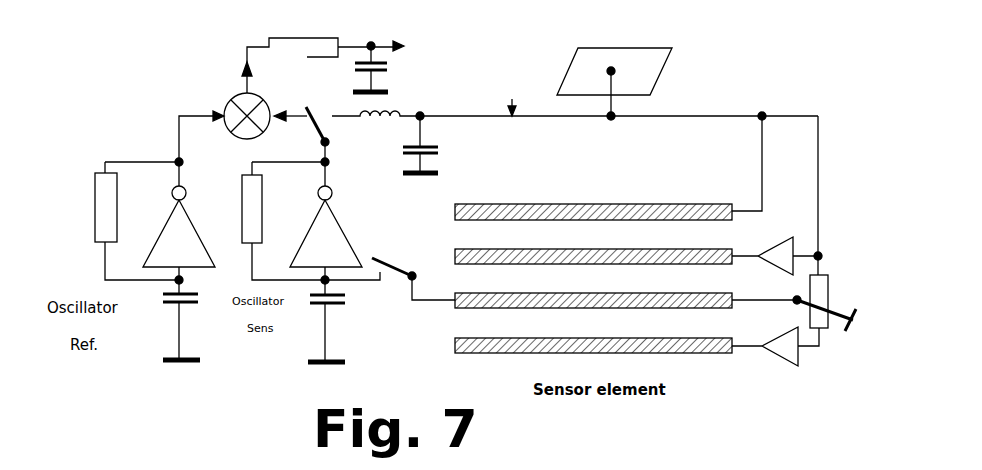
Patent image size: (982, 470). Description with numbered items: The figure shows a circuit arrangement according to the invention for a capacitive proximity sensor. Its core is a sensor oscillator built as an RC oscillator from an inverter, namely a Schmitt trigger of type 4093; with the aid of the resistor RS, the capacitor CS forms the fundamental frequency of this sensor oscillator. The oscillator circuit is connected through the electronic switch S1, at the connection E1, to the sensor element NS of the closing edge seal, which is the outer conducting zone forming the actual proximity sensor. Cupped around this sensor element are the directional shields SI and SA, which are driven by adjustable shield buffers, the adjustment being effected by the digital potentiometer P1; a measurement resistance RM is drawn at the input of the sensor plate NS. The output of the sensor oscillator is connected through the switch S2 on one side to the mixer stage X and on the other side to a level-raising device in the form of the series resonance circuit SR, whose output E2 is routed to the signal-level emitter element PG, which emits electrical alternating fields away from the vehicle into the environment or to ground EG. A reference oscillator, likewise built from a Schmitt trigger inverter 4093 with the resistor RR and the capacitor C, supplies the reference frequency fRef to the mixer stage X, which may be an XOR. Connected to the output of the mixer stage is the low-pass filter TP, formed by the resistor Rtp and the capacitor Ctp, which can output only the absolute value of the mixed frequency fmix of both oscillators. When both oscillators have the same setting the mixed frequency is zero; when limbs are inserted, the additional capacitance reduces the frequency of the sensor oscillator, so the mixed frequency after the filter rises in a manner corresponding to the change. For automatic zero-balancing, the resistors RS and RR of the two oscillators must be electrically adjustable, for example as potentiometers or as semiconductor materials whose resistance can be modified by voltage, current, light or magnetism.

The mixer stage X is at (211, 107).
The low-pass filter TP is at (331, 65).
The low-pass filter resistor Rtp is at (323, 65).
The low-pass filter capacitor Ctp is at (387, 67).
The mixed frequency fmix is at (430, 37).
The reference frequency fRef is at (187, 138).
The reference oscillator resistor RR is at (137, 221).
The sensor oscillator resistor RS is at (311, 221).
The reference oscillator capacitor C is at (191, 320).
The sensor oscillator capacitor CS is at (338, 321).
The inverter (Schmitt trigger) 4093 is at (252, 223).
The switch S2 is at (301, 136).
The electronic switch S1 is at (413, 273).
The series resonance circuit SR is at (575, 142).
The output of series resonance circuit E2 is at (499, 103).
The closing edge seal connection E1 is at (435, 293).
The ground EG is at (614, 84).
The signal-level emitter element PG is at (610, 172).
The outer directional shield SA is at (638, 195).
The proximity sensor element NS is at (628, 307).
The inner directional shield SI is at (637, 347).
The digital potentiometer P1 is at (826, 303).
The measurement resistance RM is at (471, 284).